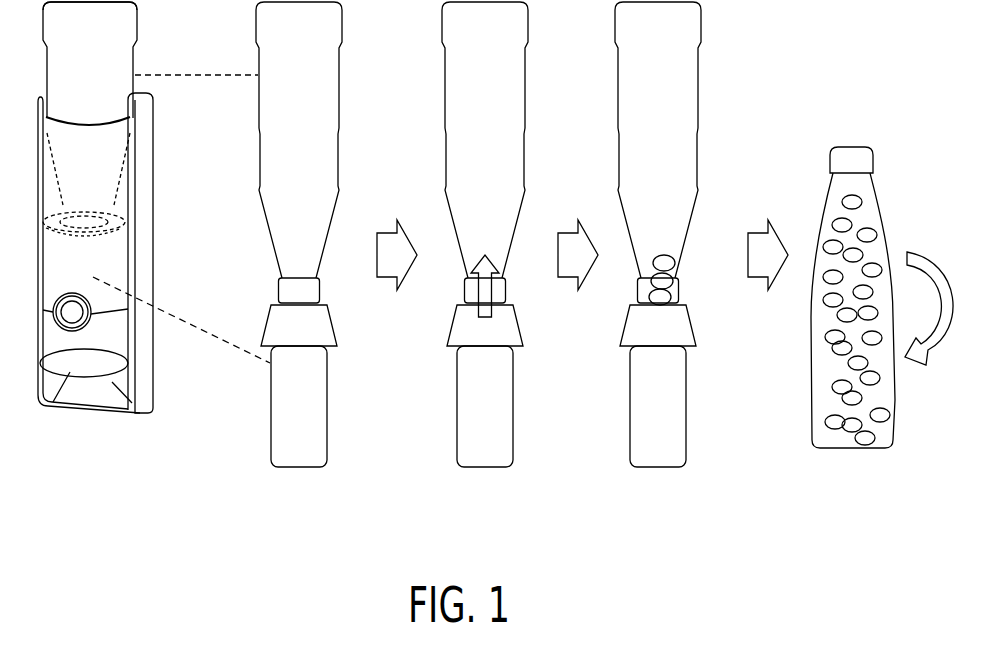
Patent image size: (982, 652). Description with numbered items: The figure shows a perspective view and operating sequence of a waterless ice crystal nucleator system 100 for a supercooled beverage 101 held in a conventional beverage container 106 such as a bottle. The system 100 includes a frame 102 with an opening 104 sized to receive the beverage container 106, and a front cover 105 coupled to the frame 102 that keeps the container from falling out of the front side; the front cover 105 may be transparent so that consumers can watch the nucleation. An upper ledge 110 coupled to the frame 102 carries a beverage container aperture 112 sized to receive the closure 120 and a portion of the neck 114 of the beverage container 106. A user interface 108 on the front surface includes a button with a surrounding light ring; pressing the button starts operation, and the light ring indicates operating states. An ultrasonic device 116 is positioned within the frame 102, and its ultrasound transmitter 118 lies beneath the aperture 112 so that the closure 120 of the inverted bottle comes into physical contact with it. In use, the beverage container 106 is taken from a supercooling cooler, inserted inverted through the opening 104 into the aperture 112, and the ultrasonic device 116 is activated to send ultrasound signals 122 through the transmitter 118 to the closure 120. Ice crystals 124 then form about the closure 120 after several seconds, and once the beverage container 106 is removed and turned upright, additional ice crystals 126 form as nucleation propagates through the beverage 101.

The waterless ice crystal nucleator system 100 is at (125, 283).
The beverage 101 is at (126, 82).
The frame 102 is at (145, 390).
The opening 104 is at (153, 97).
The front cover 105 is at (117, 123).
The beverage container 106 is at (135, 15).
The user interface 108 is at (87, 318).
The upper ledge 110 is at (108, 230).
The beverage container aperture 112 is at (118, 233).
The neck 114 is at (309, 234).
The ultrasonic device 116 is at (327, 408).
The ultrasound transmitter 118 is at (333, 328).
The closure 120 is at (320, 290).
The ultrasound signals 122 is at (492, 292).
The ice crystals 124 is at (675, 282).
The additional ice crystals 126 is at (838, 387).